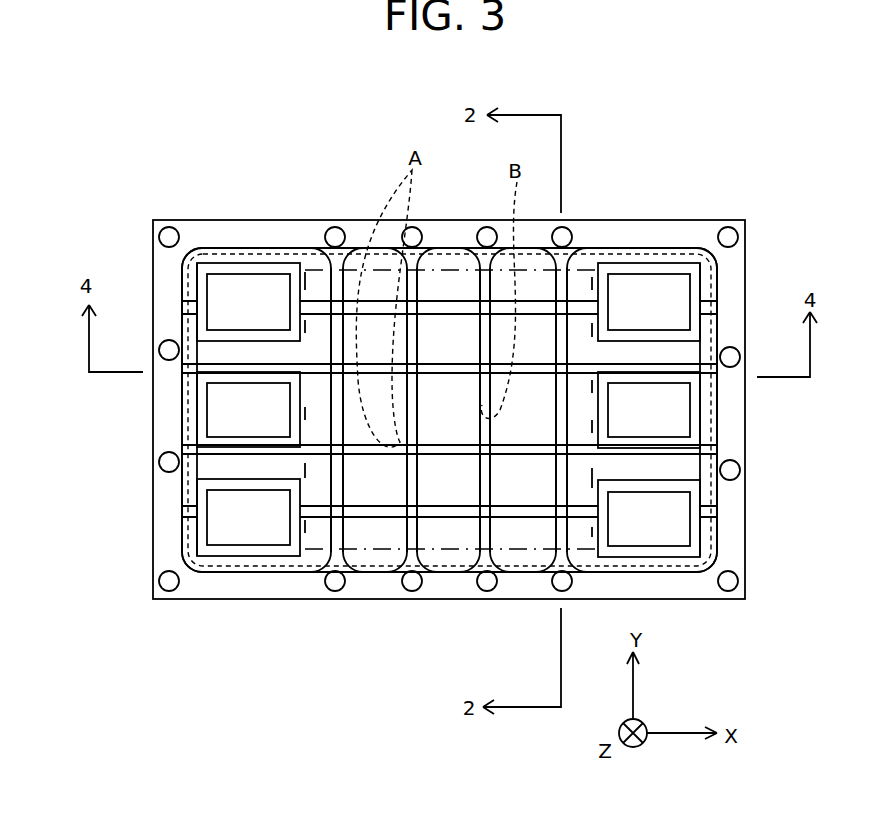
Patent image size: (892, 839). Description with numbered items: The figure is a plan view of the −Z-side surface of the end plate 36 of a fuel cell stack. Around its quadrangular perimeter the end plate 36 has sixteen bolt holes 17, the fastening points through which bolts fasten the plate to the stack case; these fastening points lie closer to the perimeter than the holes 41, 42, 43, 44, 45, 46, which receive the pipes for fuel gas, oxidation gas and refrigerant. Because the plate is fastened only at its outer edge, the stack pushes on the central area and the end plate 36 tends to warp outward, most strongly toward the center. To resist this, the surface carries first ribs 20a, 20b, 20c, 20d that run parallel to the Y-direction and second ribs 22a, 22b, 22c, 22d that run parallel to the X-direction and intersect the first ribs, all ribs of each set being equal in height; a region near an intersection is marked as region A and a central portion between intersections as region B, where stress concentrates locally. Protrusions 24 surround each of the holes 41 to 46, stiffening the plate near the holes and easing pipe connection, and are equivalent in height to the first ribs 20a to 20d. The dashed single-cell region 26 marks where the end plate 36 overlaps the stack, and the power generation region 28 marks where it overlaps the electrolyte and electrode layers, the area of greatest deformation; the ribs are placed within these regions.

The end plate 36 is at (660, 196).
The bolt holes 17 is at (167, 593).
The power generation region 28 is at (588, 244).
The single-cell region 26 is at (690, 578).
The protrusions 24 is at (432, 403).
The hole 41 is at (215, 295).
The hole 42 is at (222, 422).
The hole 43 is at (220, 527).
The hole 44 is at (675, 291).
The hole 45 is at (672, 421).
The hole 46 is at (672, 534).
The second rib 22a is at (320, 305).
The second rib 22b is at (322, 377).
The second rib 22c is at (323, 530).
The second rib 22d is at (580, 515).
The first rib 20a is at (330, 567).
The first rib 20b is at (407, 565).
The first rib 20c is at (484, 530).
The first rib 20d is at (556, 548).